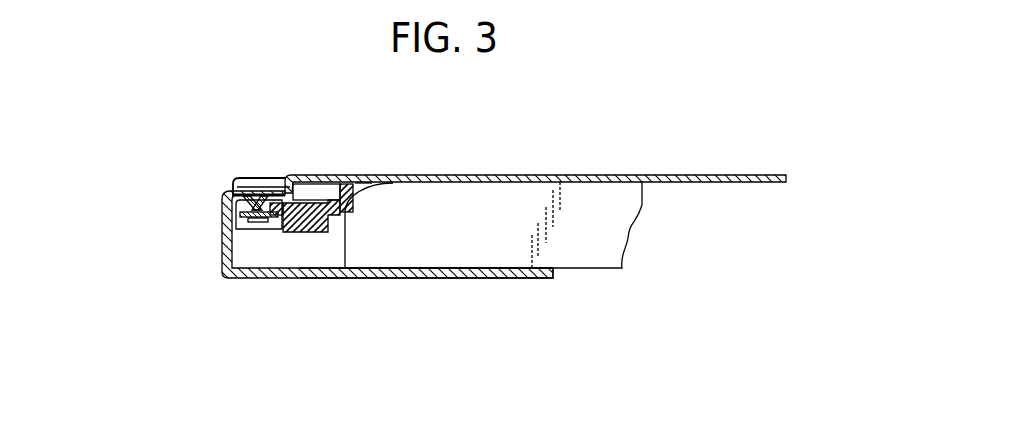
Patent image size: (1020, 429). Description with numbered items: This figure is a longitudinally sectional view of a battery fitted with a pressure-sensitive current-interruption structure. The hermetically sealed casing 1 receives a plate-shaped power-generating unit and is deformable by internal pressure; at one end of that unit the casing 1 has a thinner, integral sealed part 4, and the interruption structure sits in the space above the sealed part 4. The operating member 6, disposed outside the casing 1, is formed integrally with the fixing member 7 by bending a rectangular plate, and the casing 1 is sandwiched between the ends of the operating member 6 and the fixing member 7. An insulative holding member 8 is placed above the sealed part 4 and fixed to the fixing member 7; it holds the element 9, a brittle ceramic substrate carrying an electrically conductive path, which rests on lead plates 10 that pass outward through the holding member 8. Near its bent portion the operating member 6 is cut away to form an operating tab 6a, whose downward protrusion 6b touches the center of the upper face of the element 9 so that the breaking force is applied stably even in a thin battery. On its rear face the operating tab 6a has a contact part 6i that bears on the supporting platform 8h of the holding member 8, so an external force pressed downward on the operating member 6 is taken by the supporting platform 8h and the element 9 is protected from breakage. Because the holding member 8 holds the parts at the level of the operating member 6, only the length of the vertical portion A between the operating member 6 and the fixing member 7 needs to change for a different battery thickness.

The casing 1 is at (580, 195).
The sealed part 4 is at (302, 272).
The operating member 6 is at (481, 163).
The operating tab 6a is at (277, 190).
The protrusion 6b is at (262, 195).
The contact part 6i is at (344, 184).
The fixing member 7 is at (452, 293).
The holding member 8 is at (318, 252).
The supporting platform 8h is at (364, 183).
The element 9 is at (243, 213).
The lead plates 10 is at (257, 217).
The vertical portion A is at (222, 276).